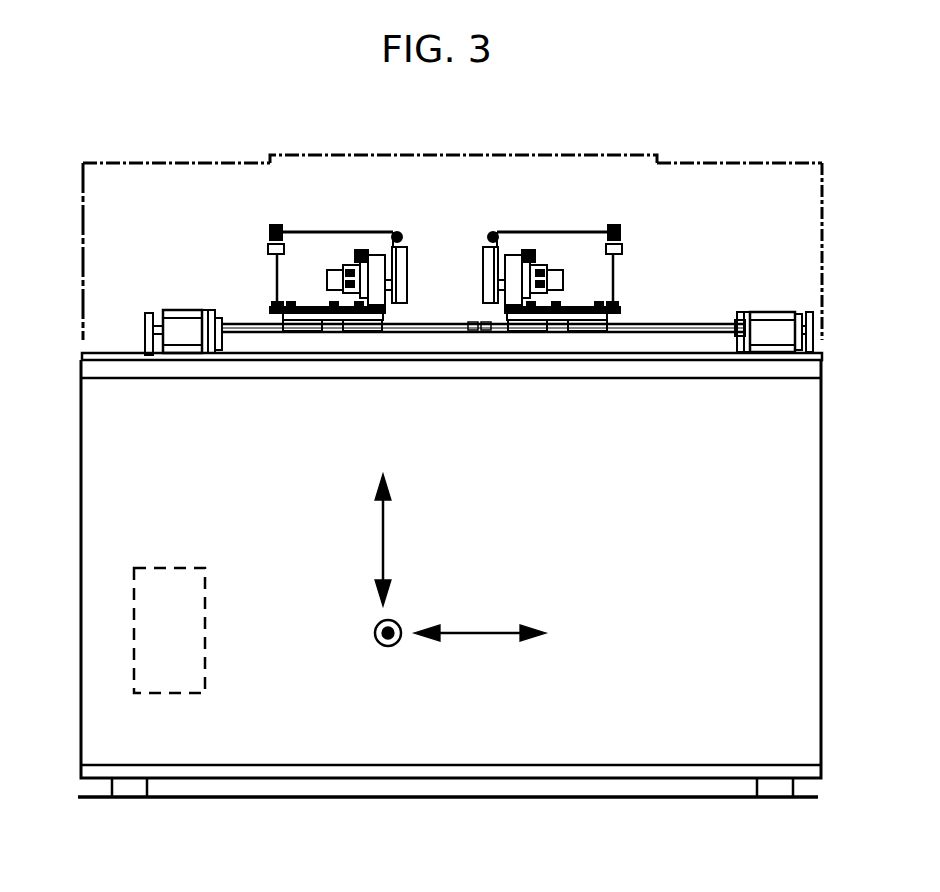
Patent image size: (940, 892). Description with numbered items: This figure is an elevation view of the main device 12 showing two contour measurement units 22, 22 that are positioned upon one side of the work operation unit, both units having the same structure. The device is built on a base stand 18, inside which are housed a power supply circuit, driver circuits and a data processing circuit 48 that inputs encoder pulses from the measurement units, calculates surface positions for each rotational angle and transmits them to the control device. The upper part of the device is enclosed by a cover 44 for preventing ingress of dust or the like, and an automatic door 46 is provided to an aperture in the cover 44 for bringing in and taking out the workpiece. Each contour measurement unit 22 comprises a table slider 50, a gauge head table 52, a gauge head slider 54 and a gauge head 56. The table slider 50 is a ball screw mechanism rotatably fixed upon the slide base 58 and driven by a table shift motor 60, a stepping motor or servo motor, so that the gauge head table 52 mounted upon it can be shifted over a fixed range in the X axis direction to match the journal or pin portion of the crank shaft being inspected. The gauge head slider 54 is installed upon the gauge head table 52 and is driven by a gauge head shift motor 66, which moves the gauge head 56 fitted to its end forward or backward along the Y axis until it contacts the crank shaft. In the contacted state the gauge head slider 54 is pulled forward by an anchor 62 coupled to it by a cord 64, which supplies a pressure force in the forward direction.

The main device 12 is at (222, 150).
The base stand 18 is at (788, 548).
The contour measurement unit 22 is at (238, 200).
The cover 44 is at (716, 163).
The automatic door 46 is at (506, 156).
The data processing circuit 48 is at (169, 630).
The table slider 50 is at (678, 325).
The gauge head table 52 is at (567, 307).
The gauge head slider 54 is at (503, 292).
The gauge head 56 is at (485, 280).
The slide base 58 is at (665, 348).
The table shift motor 60 is at (768, 312).
The anchor 62 is at (620, 246).
The cord 64 is at (550, 233).
The gauge head shift motor 66 is at (557, 270).